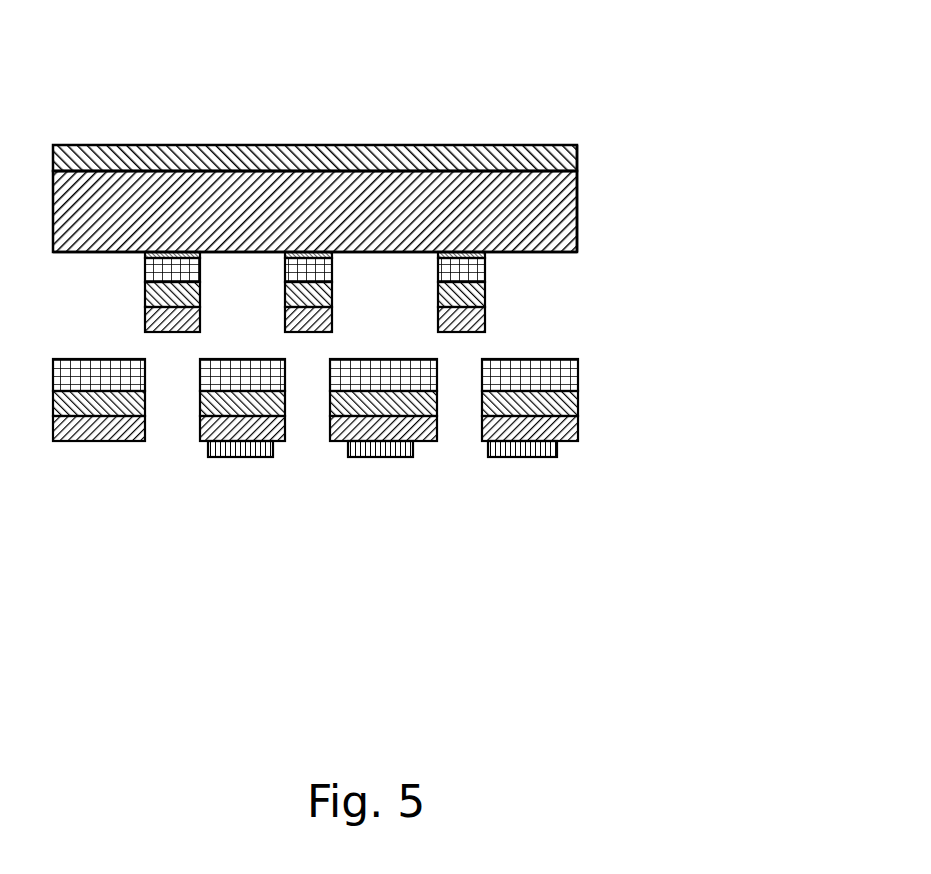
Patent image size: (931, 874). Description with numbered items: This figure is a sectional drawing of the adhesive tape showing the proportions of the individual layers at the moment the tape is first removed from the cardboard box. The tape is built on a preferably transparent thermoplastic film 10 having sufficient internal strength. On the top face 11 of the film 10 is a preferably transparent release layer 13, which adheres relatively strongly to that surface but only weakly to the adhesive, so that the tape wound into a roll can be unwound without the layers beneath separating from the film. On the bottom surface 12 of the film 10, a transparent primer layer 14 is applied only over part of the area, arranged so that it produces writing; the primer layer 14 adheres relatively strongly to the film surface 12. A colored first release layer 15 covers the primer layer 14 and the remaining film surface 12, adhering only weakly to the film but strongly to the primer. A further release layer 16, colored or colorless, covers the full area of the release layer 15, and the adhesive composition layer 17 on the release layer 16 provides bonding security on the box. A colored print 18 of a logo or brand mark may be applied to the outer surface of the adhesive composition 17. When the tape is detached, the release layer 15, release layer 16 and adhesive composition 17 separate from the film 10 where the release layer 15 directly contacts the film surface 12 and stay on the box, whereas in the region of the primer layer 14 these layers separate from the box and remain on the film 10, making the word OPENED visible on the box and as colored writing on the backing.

The thermoplastic film 10 is at (548, 190).
The top face 11 is at (517, 163).
The bottom surface 12 is at (577, 252).
The release layer 13 is at (568, 152).
The primer layer 14 is at (487, 249).
The first release layer 15 is at (483, 272).
The further release layer 16 is at (483, 295).
The adhesive composition layer 17 is at (483, 318).
The colored print 18 is at (547, 455).